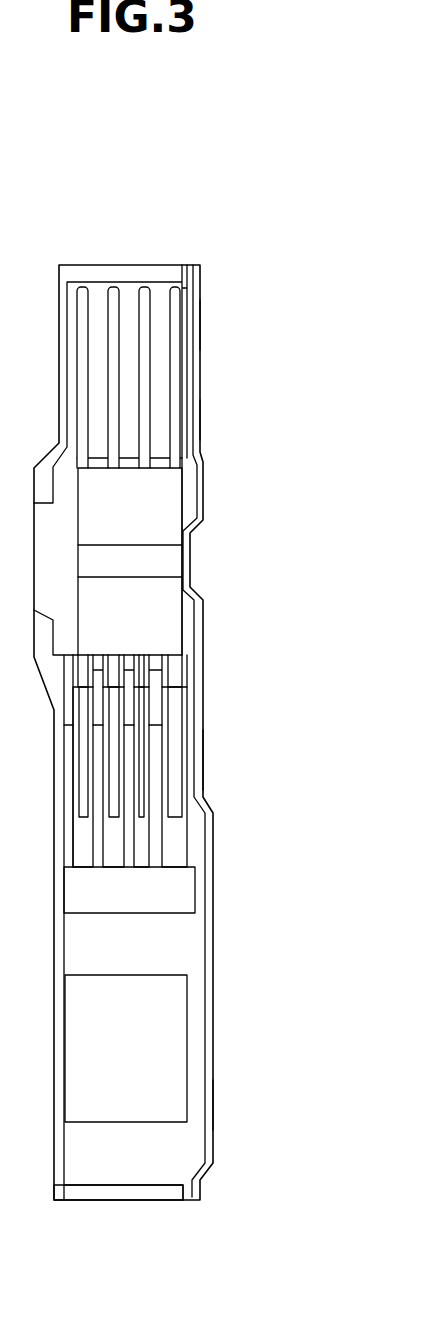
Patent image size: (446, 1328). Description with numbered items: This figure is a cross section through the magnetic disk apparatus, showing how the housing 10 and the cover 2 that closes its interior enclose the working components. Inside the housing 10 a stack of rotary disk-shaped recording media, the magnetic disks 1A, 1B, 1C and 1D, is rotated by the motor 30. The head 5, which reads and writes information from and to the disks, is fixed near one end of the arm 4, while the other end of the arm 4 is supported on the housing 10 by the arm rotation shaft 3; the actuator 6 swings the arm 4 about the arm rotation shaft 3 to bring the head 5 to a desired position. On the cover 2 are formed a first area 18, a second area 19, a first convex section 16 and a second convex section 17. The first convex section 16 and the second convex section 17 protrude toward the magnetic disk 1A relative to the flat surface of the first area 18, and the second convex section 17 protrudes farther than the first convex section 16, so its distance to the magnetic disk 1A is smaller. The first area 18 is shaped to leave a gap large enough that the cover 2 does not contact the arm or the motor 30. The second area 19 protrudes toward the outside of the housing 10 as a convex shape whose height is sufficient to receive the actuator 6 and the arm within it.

The magnetic disk 1A is at (177, 289).
The magnetic disk 1B is at (145, 287).
The magnetic disk 1C is at (113, 287).
The magnetic disk 1D is at (81, 287).
The cover 2 is at (195, 373).
The arm rotation shaft 3 is at (183, 902).
The arm 4 is at (187, 845).
The head 5 is at (183, 683).
The actuator 6 is at (173, 1043).
The housing 10 is at (122, 1193).
The first convex section 16 is at (198, 328).
The second convex section 17 is at (197, 426).
The first area 18 is at (203, 761).
The second area 19 is at (213, 1106).
The motor 30 is at (163, 503).